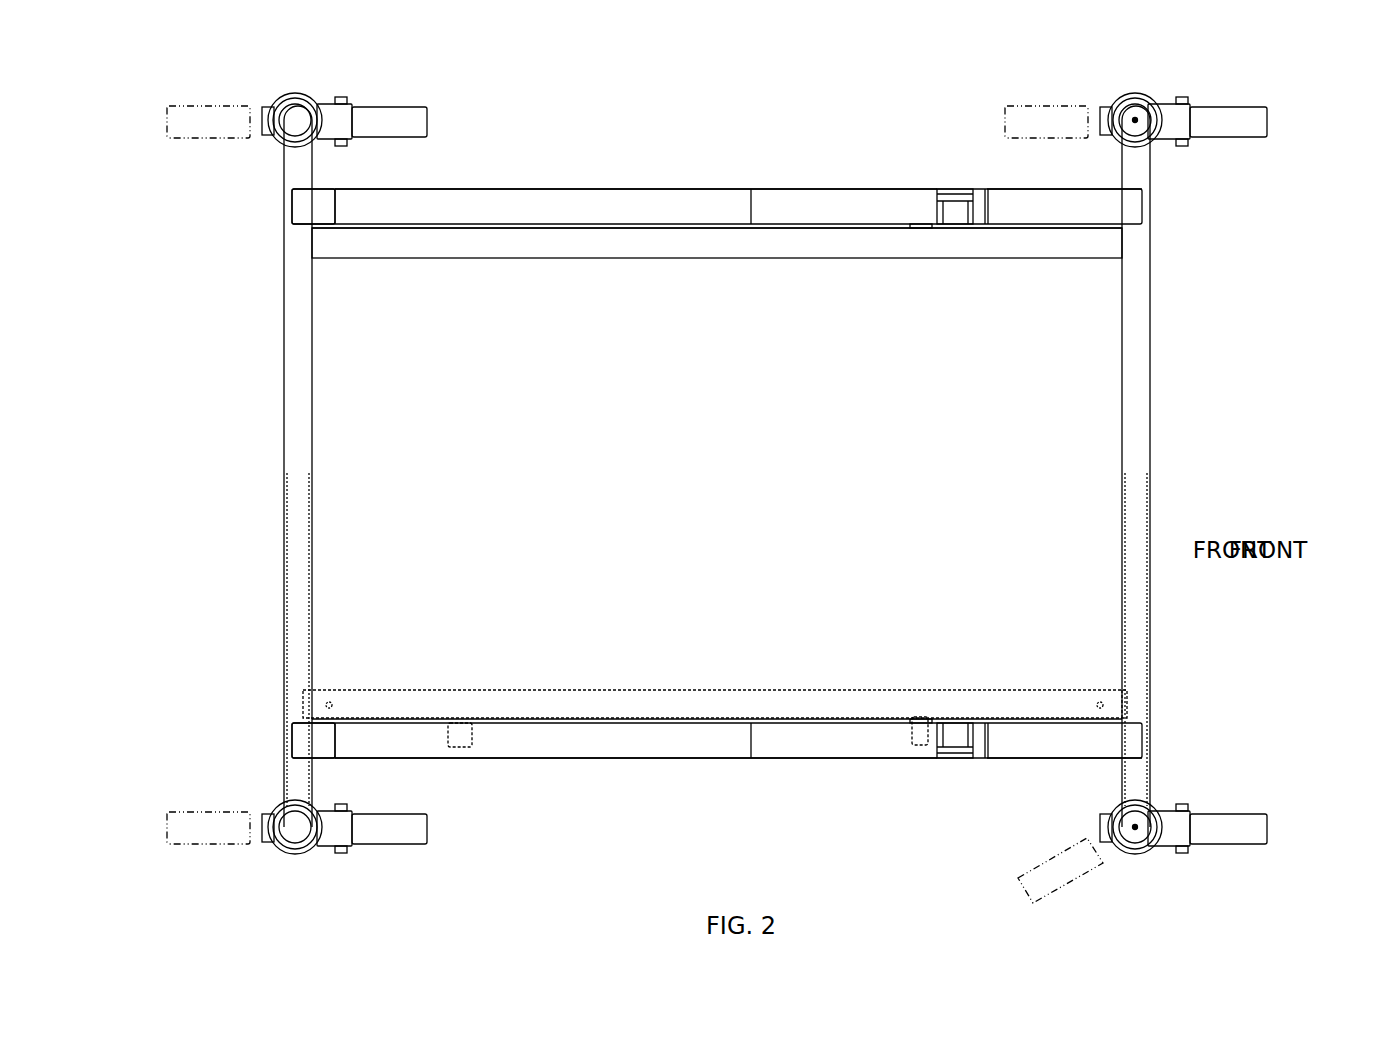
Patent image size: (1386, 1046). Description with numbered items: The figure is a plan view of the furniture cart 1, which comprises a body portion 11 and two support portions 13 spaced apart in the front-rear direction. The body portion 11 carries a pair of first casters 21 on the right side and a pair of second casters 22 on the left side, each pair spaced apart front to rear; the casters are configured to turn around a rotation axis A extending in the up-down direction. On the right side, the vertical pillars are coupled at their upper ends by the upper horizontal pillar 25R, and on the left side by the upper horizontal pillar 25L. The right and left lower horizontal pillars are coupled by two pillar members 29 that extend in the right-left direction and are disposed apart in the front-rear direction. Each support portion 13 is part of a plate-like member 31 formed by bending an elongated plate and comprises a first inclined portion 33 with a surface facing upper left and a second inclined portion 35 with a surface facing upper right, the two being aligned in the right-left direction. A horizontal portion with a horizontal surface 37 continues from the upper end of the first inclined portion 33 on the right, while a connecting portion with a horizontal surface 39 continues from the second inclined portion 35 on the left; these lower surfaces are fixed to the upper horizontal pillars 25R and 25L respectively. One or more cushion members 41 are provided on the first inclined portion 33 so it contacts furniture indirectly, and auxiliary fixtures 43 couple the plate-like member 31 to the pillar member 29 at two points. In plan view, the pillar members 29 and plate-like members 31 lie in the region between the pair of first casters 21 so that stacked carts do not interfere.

The furniture cart 1 is at (1337, 242).
The body portion 11 is at (1155, 380).
The support portion 13 is at (884, 170).
The first caster 21 is at (1068, 118).
The second caster 22 is at (408, 110).
The upper horizontal pillar 25L is at (305, 422).
The upper horizontal pillar 25R is at (1128, 420).
The pillar member 29 is at (706, 243).
The plate-like member 31 is at (688, 190).
The first inclined portion 33 is at (823, 192).
The second inclined portion 35 is at (545, 192).
The horizontal surface 37 is at (1052, 214).
The horizontal surface 39 is at (300, 207).
The cushion member 41 is at (972, 192).
The auxiliary fixture 43 is at (462, 748).
The rotation axis A is at (1136, 122).